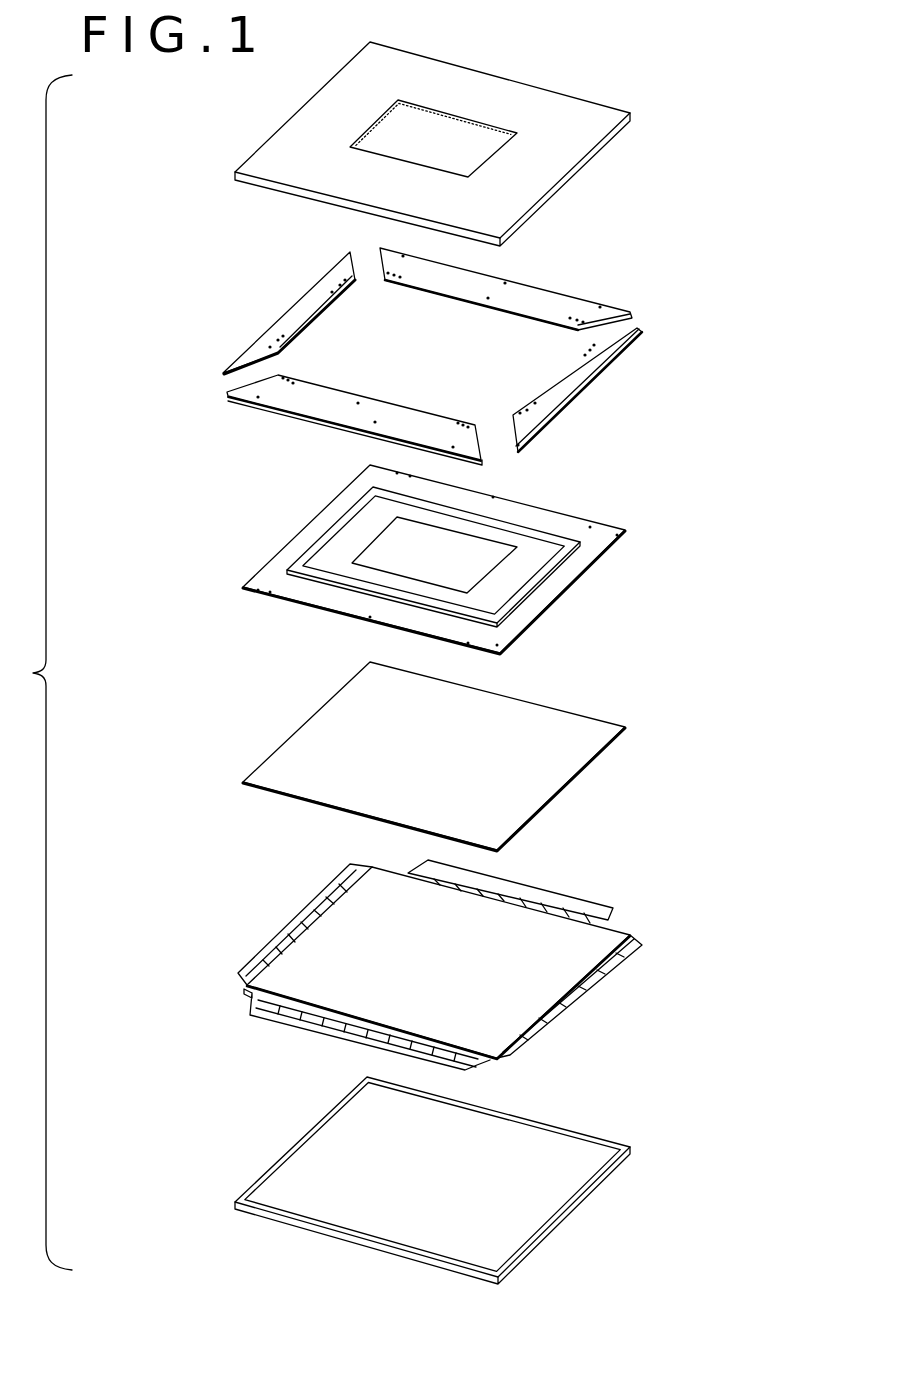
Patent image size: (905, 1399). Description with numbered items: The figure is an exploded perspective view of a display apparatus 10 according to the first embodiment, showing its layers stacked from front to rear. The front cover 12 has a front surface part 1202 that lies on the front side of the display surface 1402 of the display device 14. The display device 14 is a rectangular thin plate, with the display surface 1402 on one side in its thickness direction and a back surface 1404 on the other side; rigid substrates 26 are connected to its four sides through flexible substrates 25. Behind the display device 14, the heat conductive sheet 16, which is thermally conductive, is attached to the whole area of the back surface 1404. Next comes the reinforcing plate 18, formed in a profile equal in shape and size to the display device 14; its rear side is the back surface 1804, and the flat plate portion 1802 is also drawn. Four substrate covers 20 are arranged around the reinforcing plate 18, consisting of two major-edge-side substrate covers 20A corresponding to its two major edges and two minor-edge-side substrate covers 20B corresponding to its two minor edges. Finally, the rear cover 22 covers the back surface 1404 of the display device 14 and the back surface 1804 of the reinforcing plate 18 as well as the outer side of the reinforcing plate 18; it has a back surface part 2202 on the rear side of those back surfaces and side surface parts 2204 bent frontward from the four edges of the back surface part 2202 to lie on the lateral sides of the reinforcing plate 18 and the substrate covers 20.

The display apparatus 10 is at (669, 61).
The front cover 12 is at (575, 1190).
The front surface part 1202 is at (310, 1188).
The display device 14 is at (570, 980).
The display surface 1402 is at (245, 995).
The back surface 1404 is at (300, 958).
The heat conductive sheet 16 is at (555, 783).
The reinforcing plate 18 is at (562, 590).
The flat plate portion of frame 1802 is at (305, 607).
The back surface 1804 is at (298, 546).
The substrate covers 20 is at (459, 356).
The major-edge-side substrate covers 20A is at (597, 270).
The minor-edge-side substrate covers 20B is at (290, 318).
The rear cover 22 is at (542, 185).
The back surface part 2202 is at (515, 100).
The side surface parts 2204 is at (623, 95).
The flexible substrates 25 is at (520, 896).
The rigid substrates 26 is at (573, 905).